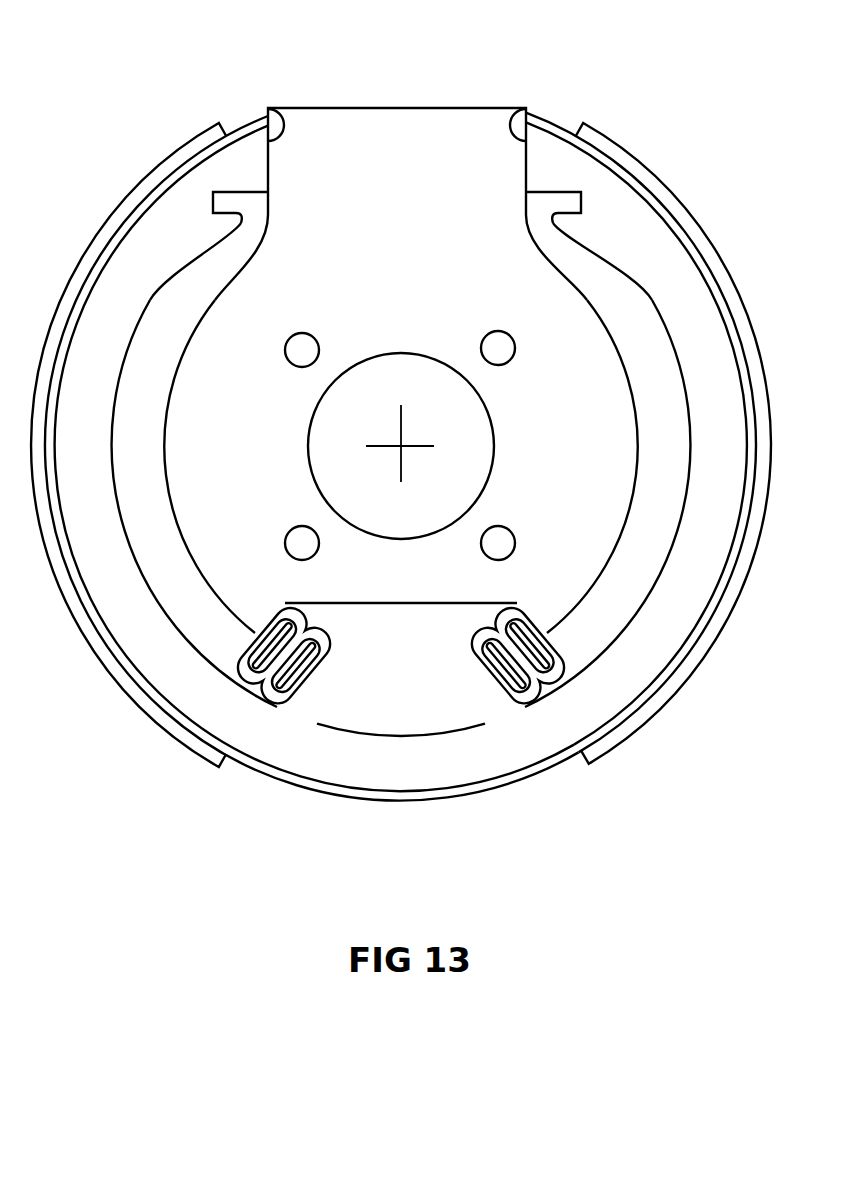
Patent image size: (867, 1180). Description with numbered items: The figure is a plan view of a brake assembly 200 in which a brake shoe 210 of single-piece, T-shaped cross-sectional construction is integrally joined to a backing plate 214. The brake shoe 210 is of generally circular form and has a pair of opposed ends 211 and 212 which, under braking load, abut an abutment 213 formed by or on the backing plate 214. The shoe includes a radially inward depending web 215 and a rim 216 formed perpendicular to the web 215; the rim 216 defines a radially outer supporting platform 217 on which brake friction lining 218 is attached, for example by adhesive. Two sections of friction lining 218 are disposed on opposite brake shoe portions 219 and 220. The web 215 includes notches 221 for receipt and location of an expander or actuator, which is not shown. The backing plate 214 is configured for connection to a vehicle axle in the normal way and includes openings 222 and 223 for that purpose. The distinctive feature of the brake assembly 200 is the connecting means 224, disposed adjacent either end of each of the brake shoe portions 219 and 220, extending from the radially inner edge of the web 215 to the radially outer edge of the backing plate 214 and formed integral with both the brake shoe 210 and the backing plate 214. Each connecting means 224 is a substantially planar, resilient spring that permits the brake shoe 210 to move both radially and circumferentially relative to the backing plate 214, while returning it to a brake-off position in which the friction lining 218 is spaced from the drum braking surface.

The brake assembly 200 is at (186, 84).
The brake shoe 210 is at (180, 230).
The opposed end 211 is at (280, 106).
The opposed end 212 is at (511, 133).
The abutment 213 is at (374, 118).
The backing plate 214 is at (583, 330).
The web 215 is at (678, 537).
The rim 216 is at (527, 770).
The radially outer supporting platform 217 is at (680, 661).
The brake friction lining 218 is at (648, 713).
The brake shoe portion 219 is at (95, 366).
The brake shoe portion 220 is at (713, 492).
The notches 221 is at (262, 205).
The openings 222 is at (302, 526).
The opening 223 is at (373, 357).
The connecting means 224 is at (308, 650).